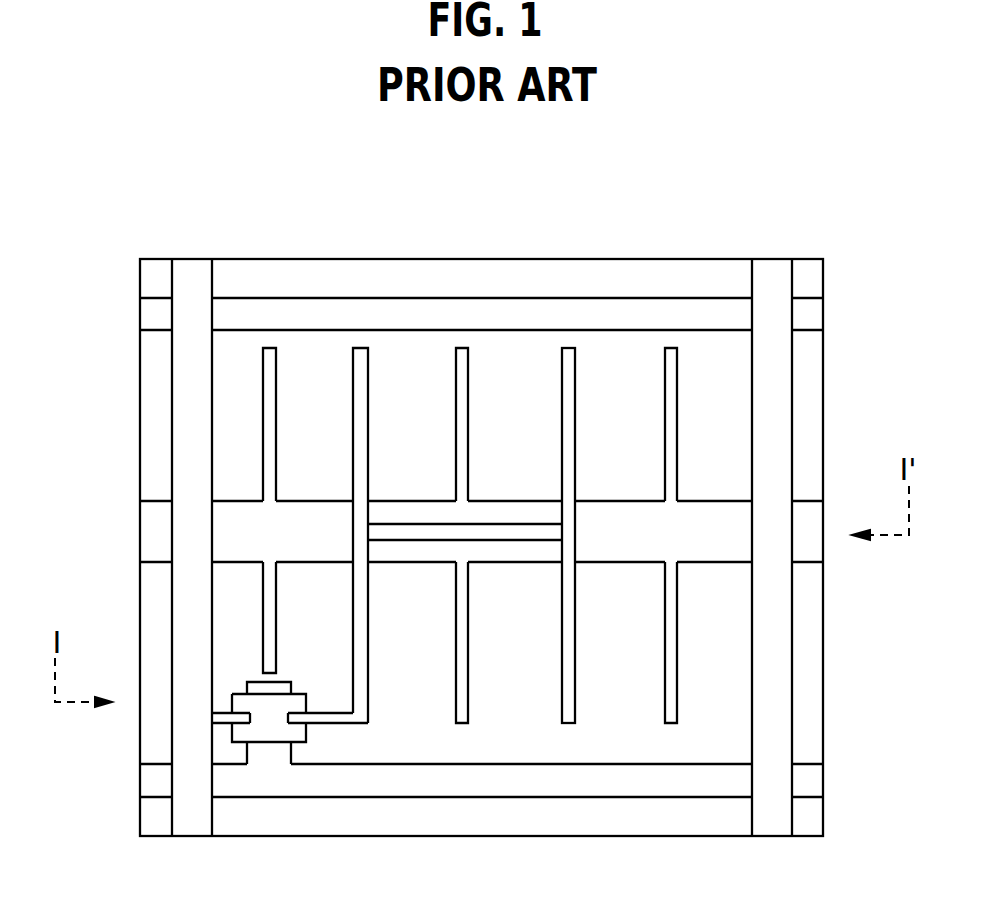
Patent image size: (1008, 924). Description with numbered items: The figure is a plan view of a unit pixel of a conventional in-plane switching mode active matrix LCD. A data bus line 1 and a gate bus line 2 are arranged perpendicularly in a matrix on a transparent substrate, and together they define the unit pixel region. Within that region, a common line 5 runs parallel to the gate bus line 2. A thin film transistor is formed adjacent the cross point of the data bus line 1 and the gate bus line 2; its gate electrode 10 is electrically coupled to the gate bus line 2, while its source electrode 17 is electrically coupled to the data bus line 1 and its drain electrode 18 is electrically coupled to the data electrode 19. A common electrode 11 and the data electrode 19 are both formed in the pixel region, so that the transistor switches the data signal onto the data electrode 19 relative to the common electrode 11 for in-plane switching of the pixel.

The data bus line 1 is at (150, 414).
The common line 5 is at (150, 532).
The common electrode 11 is at (462, 350).
The data electrode 19 is at (360, 350).
The gate electrode 10 is at (268, 755).
The source electrode 17 is at (225, 718).
The drain electrode 18 is at (315, 718).
The gate bus line 2 is at (385, 820).